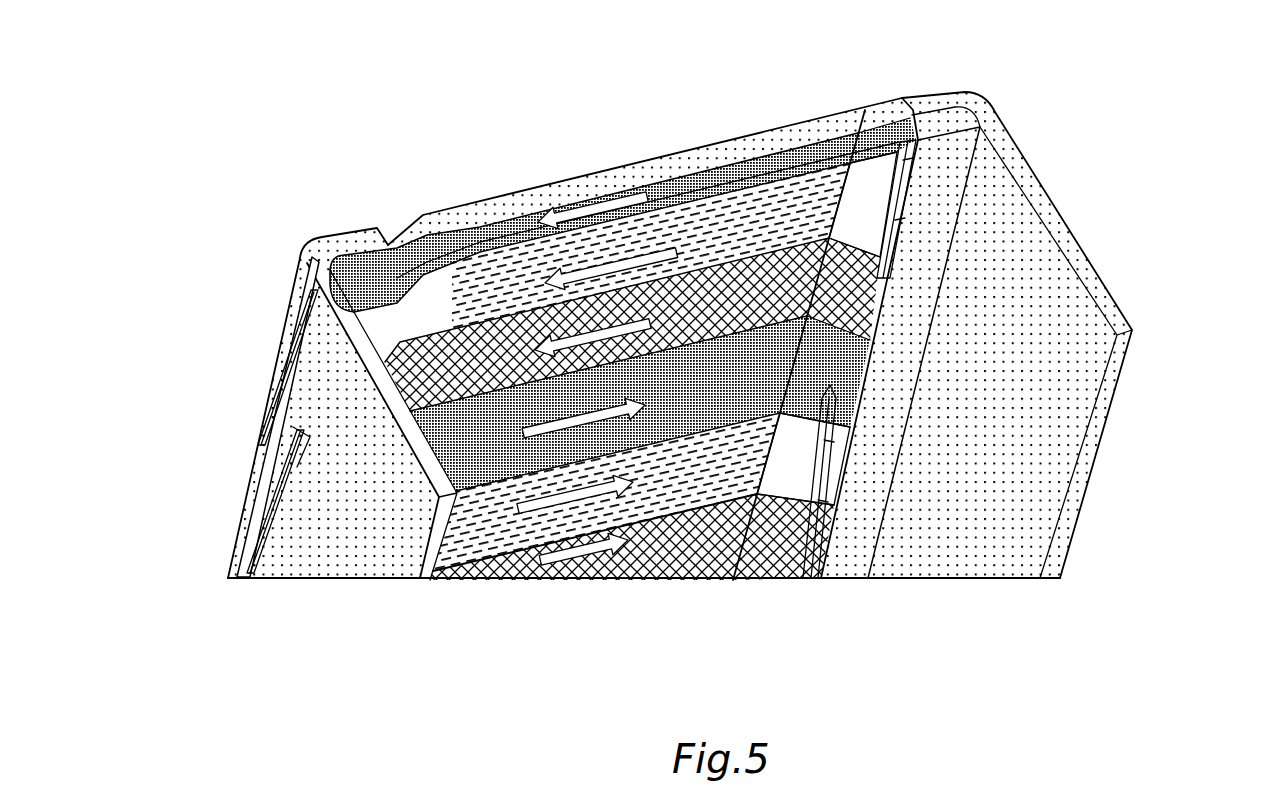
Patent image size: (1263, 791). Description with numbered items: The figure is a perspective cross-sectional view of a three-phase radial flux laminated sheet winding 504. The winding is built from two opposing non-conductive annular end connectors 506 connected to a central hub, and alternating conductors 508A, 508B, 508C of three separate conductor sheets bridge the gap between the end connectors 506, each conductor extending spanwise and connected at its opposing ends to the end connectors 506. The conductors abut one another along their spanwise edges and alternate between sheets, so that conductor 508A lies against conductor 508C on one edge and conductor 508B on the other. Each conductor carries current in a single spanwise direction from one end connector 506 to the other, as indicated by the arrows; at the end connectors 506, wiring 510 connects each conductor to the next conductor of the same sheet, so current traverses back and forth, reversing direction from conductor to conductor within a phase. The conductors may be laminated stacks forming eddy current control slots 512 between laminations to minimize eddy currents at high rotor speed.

The radial flux laminated sheet winding 504 is at (372, 104).
The end connector 506 is at (357, 545).
The conductor 508A is at (623, 304).
The conductor 508B is at (665, 361).
The conductor 508C is at (644, 409).
The wiring 510 is at (300, 347).
The eddy current control slot 512 is at (670, 180).